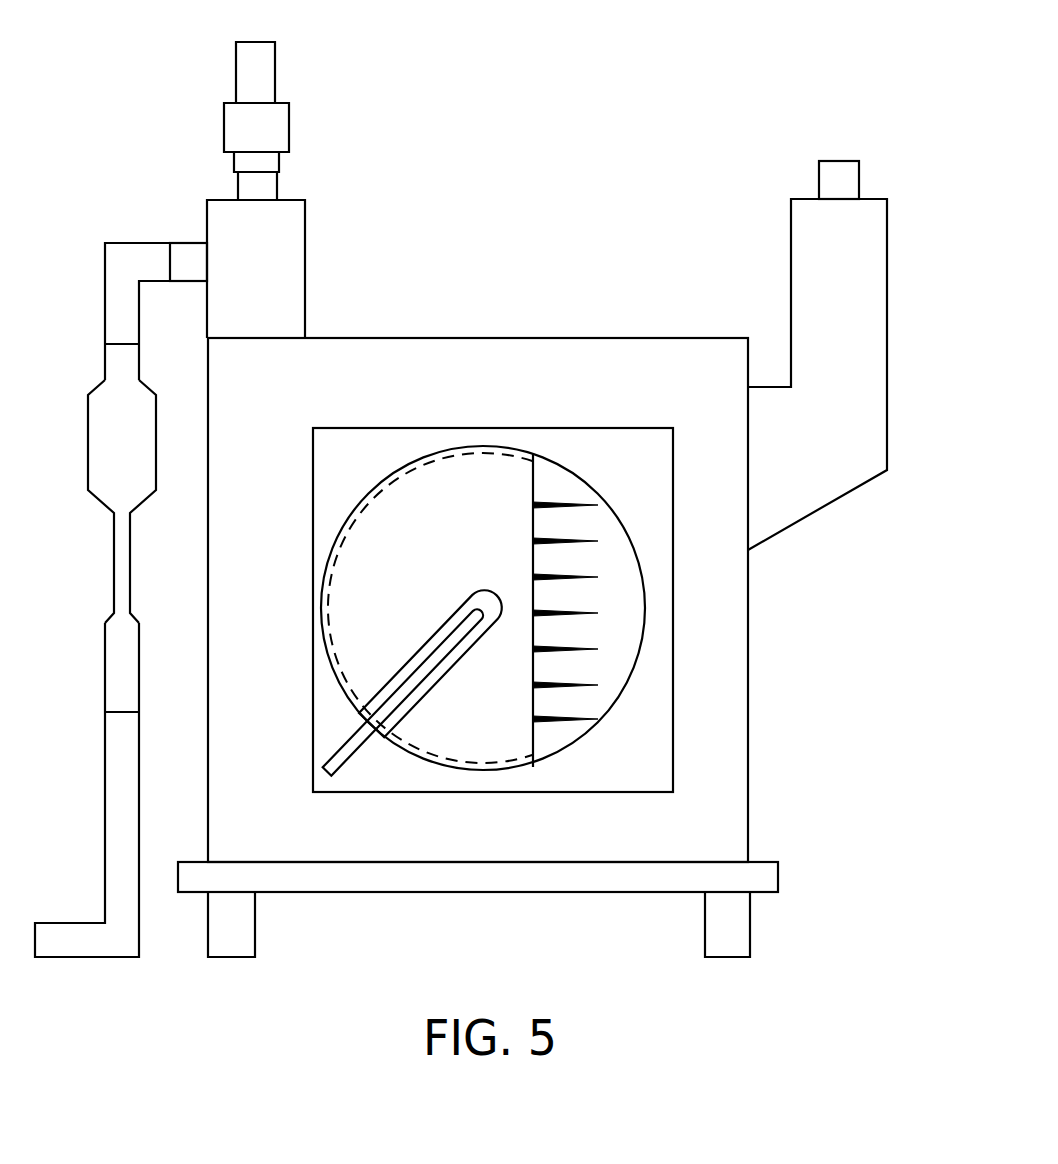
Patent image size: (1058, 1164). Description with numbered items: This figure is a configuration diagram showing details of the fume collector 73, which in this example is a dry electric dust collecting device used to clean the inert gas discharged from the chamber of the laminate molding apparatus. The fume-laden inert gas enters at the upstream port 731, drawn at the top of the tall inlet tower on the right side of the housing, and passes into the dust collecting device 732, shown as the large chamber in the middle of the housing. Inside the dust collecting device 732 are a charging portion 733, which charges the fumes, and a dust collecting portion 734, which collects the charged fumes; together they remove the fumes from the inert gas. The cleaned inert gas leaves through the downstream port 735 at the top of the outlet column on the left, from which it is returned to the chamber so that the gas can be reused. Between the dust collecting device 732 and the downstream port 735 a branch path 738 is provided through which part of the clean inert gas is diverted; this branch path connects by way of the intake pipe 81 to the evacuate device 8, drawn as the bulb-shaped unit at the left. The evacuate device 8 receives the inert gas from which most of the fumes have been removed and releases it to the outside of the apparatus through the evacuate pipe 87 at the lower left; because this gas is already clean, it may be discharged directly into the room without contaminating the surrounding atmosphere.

The fume collector 73 is at (656, 209).
The downstream port 735 is at (269, 55).
The upstream port 731 is at (853, 172).
The connecting block 738 is at (190, 242).
The intake pipe 81 is at (107, 286).
The evacuate device 8 is at (92, 477).
The evacuate pipe 87 is at (113, 857).
The dust collecting device 732 is at (603, 425).
The dust collecting portion 734 is at (533, 798).
The charging portion 733 is at (643, 798).